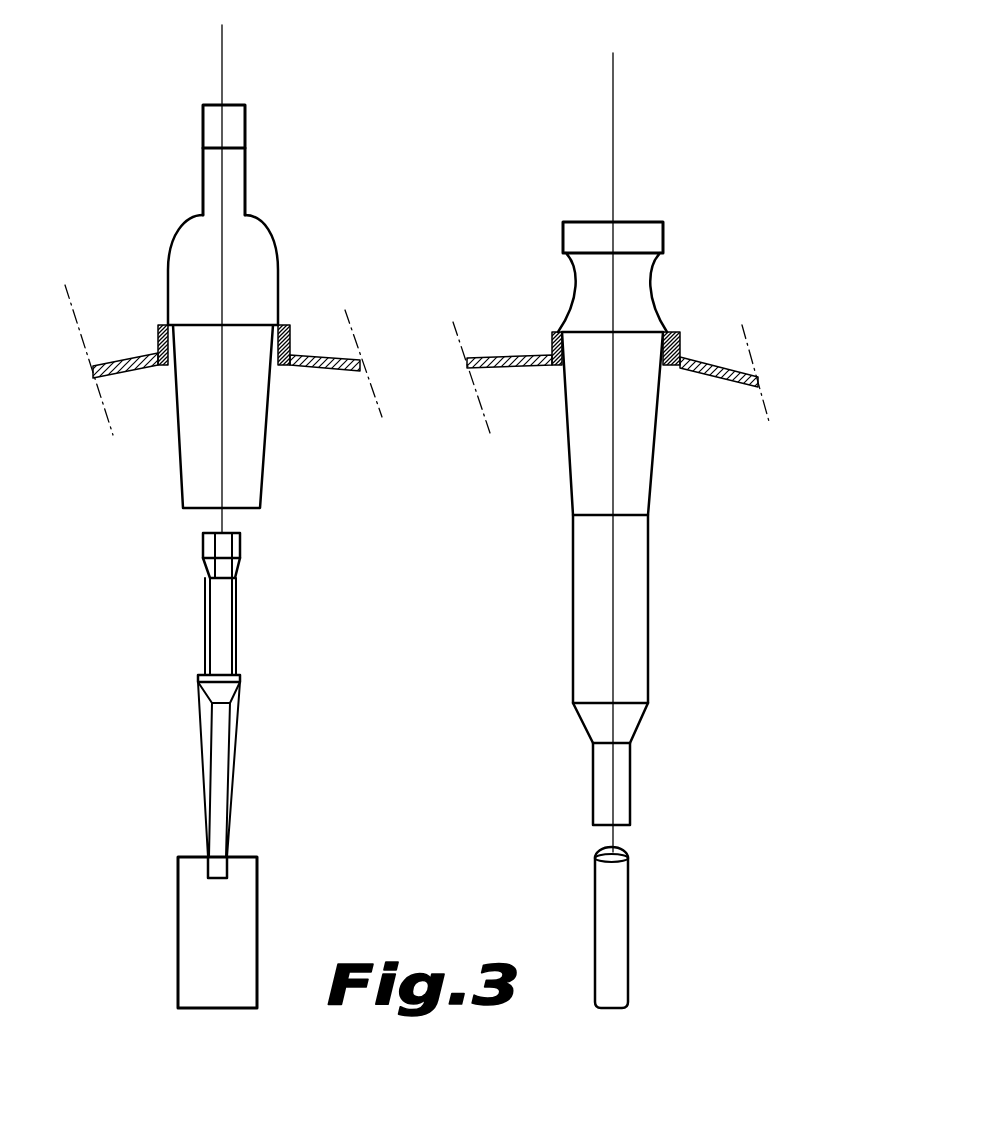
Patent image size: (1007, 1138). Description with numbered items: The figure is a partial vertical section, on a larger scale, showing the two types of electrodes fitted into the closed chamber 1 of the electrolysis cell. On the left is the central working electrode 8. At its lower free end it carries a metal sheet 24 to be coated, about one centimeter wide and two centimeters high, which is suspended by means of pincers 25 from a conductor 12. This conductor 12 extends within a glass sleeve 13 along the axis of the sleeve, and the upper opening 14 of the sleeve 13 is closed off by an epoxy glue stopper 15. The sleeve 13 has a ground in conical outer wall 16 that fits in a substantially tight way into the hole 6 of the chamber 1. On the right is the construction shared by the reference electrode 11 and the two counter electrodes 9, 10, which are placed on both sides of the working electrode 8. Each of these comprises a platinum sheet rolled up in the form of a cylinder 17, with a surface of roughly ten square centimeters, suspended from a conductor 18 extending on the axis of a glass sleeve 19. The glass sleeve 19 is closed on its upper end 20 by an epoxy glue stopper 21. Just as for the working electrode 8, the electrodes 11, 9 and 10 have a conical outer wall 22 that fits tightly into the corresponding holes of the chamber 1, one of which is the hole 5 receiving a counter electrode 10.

The closed chamber 1 is at (703, 363).
The conical internally ground in hole 5 is at (677, 335).
The conical internally ground in hole 6 is at (157, 325).
The working electrode 8 is at (258, 580).
The counter electrode 9 is at (694, 578).
The counter electrode 10 is at (694, 578).
The reference electrode 11 is at (683, 508).
The conductor 12 is at (218, 448).
The glass sleeve 13 is at (268, 425).
The upper opening 14 is at (203, 120).
The epoxy glue stopper 15 is at (230, 122).
The ground in conical outer wall 16 is at (280, 325).
The cylinder 17 is at (622, 930).
The conductor 18 is at (613, 657).
The glass sleeve 19 is at (573, 593).
The upper end 20 is at (653, 288).
The epoxy glue stopper 21 is at (630, 270).
The conical outer wall 22 is at (555, 333).
The metal sheet 24 is at (232, 908).
The pincers 25 is at (225, 763).